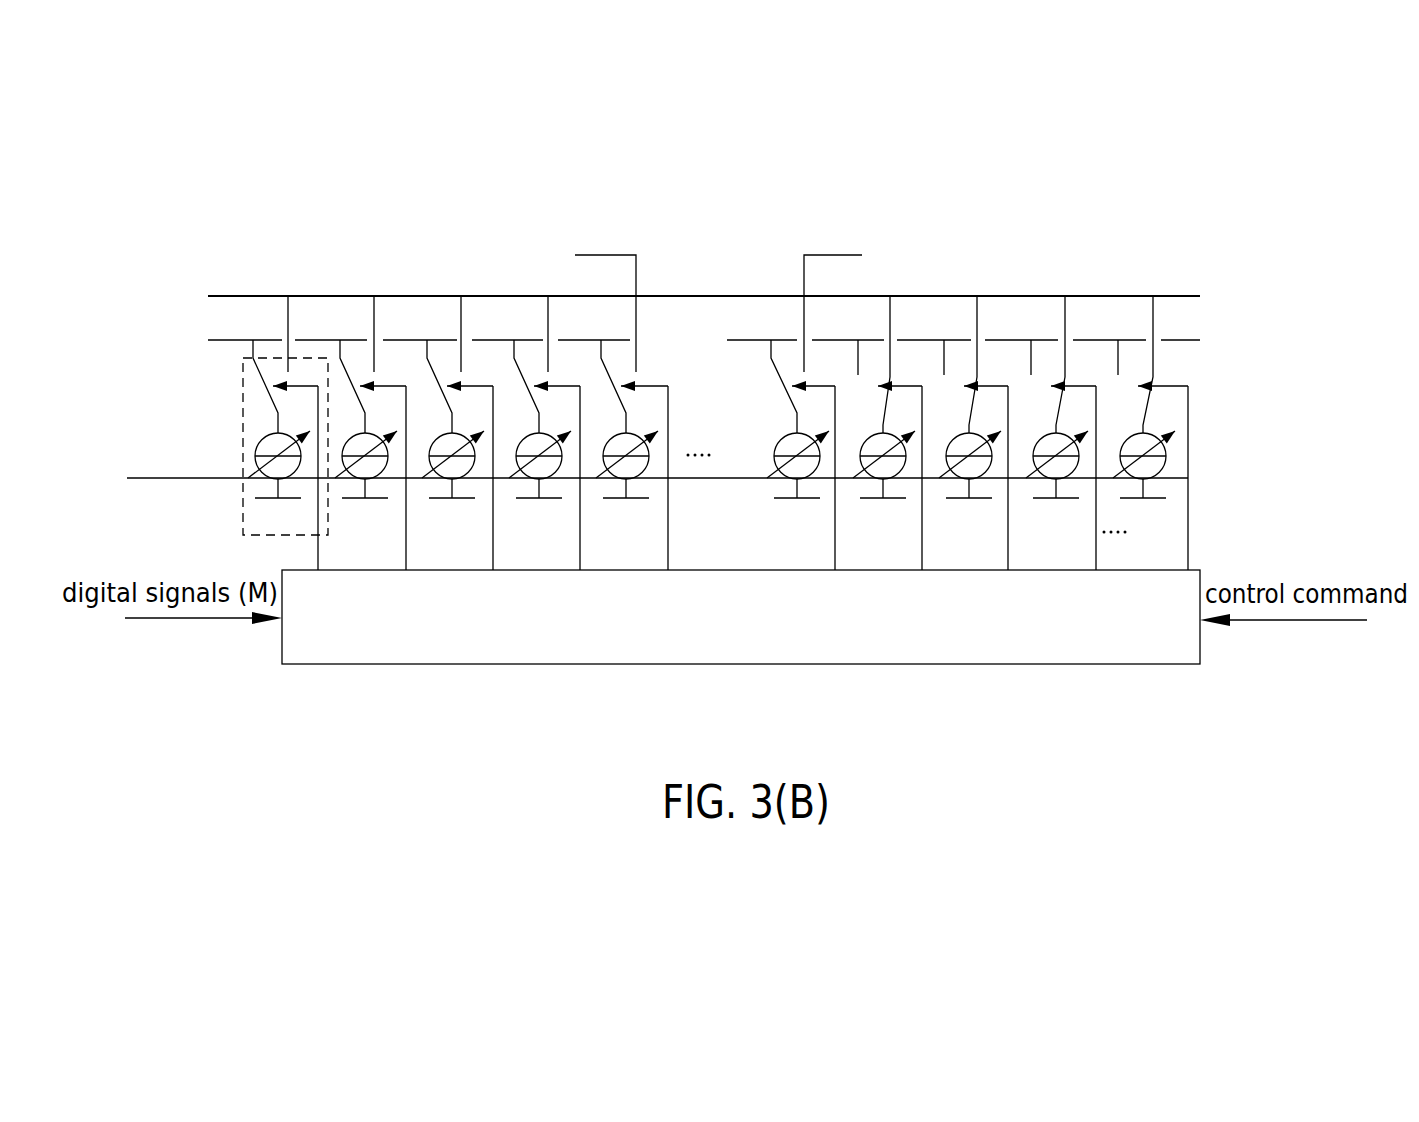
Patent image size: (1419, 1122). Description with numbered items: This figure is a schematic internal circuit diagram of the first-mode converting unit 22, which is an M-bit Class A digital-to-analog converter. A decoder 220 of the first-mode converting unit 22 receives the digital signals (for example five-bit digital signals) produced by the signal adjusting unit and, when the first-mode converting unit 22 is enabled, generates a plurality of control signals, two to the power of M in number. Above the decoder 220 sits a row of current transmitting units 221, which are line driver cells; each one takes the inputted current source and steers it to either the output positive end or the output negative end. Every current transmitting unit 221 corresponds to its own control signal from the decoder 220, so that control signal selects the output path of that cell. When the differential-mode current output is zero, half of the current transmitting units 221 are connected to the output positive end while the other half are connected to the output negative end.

The first-mode converting unit 22 is at (1207, 270).
The decoder 220 is at (885, 664).
The current transmitting unit 221 is at (243, 412).